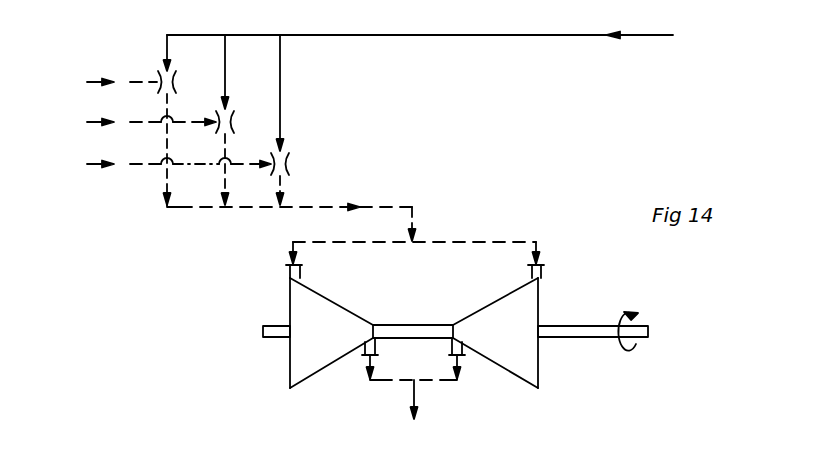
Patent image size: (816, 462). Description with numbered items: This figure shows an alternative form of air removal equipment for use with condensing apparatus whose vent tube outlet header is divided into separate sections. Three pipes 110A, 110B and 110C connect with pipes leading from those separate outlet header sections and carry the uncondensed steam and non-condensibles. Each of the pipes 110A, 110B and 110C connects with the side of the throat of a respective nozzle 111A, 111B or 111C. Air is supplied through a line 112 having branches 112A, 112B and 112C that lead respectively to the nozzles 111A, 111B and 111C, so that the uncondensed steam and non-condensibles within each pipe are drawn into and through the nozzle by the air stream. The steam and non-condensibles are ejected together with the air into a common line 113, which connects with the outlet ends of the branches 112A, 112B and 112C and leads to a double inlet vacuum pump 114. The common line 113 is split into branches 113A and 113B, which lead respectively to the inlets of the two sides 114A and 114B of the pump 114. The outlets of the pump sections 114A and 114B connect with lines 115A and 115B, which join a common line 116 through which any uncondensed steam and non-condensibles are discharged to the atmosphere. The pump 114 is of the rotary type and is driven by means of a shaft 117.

The pipe 110A is at (128, 166).
The pipe 110B is at (125, 124).
The pipe 110C is at (124, 84).
The nozzle 111A is at (290, 165).
The nozzle 111B is at (235, 124).
The nozzle 111C is at (177, 84).
The line 112 is at (440, 36).
The branch 112A is at (282, 60).
The branch 112B is at (225, 52).
The branch 112C is at (165, 48).
The common line 113 is at (256, 209).
The branch 113A is at (319, 244).
The branch 113B is at (495, 243).
The double inlet vacuum pump 114 is at (374, 322).
The pump side 114A is at (289, 295).
The pump side 114B is at (540, 284).
The line 115A is at (370, 381).
The line 115B is at (440, 381).
The common line 116 is at (417, 400).
The shaft 117 is at (600, 338).